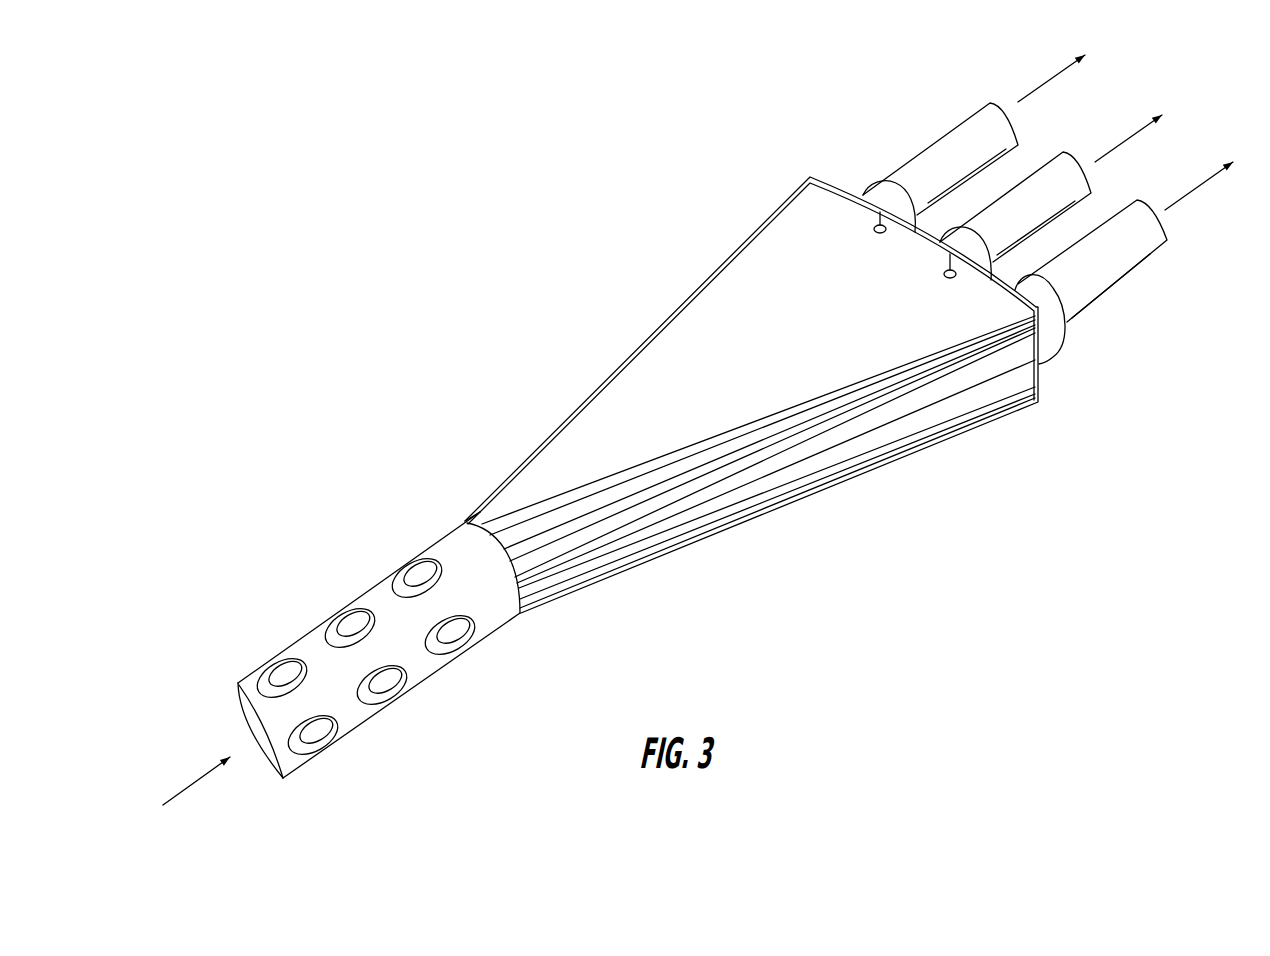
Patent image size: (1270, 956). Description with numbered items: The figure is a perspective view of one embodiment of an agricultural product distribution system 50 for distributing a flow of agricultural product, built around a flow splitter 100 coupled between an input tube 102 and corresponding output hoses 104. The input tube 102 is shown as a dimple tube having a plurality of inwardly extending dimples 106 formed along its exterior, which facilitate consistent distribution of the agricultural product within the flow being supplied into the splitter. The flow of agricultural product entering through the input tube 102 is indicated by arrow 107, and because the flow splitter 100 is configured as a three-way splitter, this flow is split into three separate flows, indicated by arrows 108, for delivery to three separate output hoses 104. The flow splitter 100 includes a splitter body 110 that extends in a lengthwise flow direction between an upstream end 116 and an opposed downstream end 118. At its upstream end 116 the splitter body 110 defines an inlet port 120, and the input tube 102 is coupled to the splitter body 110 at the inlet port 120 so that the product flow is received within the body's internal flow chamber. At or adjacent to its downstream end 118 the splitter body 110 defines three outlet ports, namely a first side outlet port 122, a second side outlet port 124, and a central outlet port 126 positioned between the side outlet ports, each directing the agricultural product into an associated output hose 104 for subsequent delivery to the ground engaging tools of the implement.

The agricultural product distribution system 50 is at (383, 244).
The flow splitter 100 is at (627, 375).
The input tube 102 is at (318, 608).
The output hoses 104 is at (946, 240).
The dimples 106 is at (417, 560).
The arrow indicating flow of agricultural product 107 is at (175, 798).
The arrows indicating separate flows 108 is at (1058, 72).
The splitter body 110 is at (783, 478).
The upstream end 116 is at (478, 508).
The downstream end 118 is at (1080, 368).
The inlet port 120 is at (456, 468).
The first side outlet port 122 is at (878, 192).
The second side outlet port 124 is at (1053, 322).
The central outlet port 126 is at (938, 242).